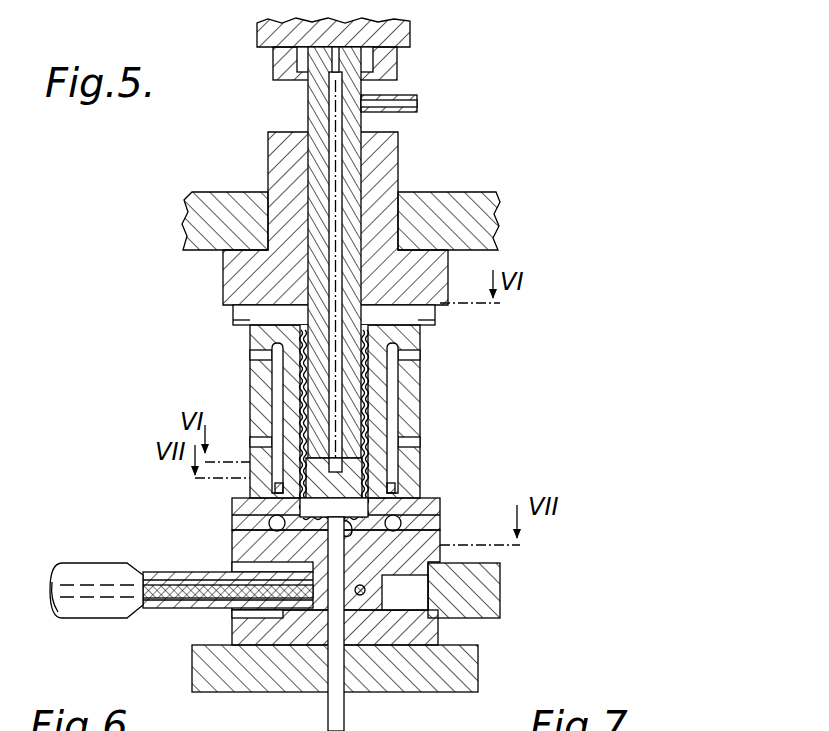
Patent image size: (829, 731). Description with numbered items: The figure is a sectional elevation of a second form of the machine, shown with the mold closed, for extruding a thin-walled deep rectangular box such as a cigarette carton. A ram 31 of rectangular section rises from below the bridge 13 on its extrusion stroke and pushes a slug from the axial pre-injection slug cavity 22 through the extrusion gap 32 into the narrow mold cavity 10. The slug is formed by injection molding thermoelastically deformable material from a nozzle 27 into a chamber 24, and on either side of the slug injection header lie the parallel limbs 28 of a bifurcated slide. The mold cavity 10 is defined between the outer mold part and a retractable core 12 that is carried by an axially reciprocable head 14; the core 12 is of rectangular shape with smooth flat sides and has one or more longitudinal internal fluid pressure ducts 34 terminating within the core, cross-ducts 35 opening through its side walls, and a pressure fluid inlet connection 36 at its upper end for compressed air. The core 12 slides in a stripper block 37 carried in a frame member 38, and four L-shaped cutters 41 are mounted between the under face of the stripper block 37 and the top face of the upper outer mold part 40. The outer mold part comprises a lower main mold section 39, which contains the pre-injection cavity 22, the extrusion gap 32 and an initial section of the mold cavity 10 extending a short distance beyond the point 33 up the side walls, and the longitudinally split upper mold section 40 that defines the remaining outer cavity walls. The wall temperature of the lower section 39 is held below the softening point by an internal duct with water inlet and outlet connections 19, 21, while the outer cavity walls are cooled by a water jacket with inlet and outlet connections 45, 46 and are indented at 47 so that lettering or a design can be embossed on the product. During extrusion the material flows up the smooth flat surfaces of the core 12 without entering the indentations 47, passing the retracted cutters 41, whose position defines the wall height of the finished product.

The mold cavity 10 is at (375, 495).
The core 12 is at (362, 393).
The bridge 13 is at (470, 680).
The head 14 is at (262, 35).
The water inlet connection 19 is at (231, 523).
The water outlet connection 21 is at (430, 523).
The pre-injection slug cavity 22 is at (345, 527).
The chamber 24 is at (440, 630).
The nozzle 27 is at (70, 565).
The limbs 28 is at (490, 612).
The ram 31 is at (338, 712).
The extrusion gap 32 is at (375, 520).
The point 33 is at (300, 520).
The longitudinal internal fluid pressure duct 34 is at (335, 283).
The cross-ducts 35 is at (350, 462).
The pressure fluid inlet connection 36 is at (405, 97).
The stripper block 37 is at (445, 262).
The frame member 38 is at (470, 192).
The lower main mold section 39 is at (245, 552).
The upper outer mold part 40 is at (262, 410).
The L-shaped cutters 41 is at (243, 320).
The water inlet connection 45 is at (253, 442).
The water outlet connection 46 is at (262, 355).
The indentations 47 is at (300, 412).